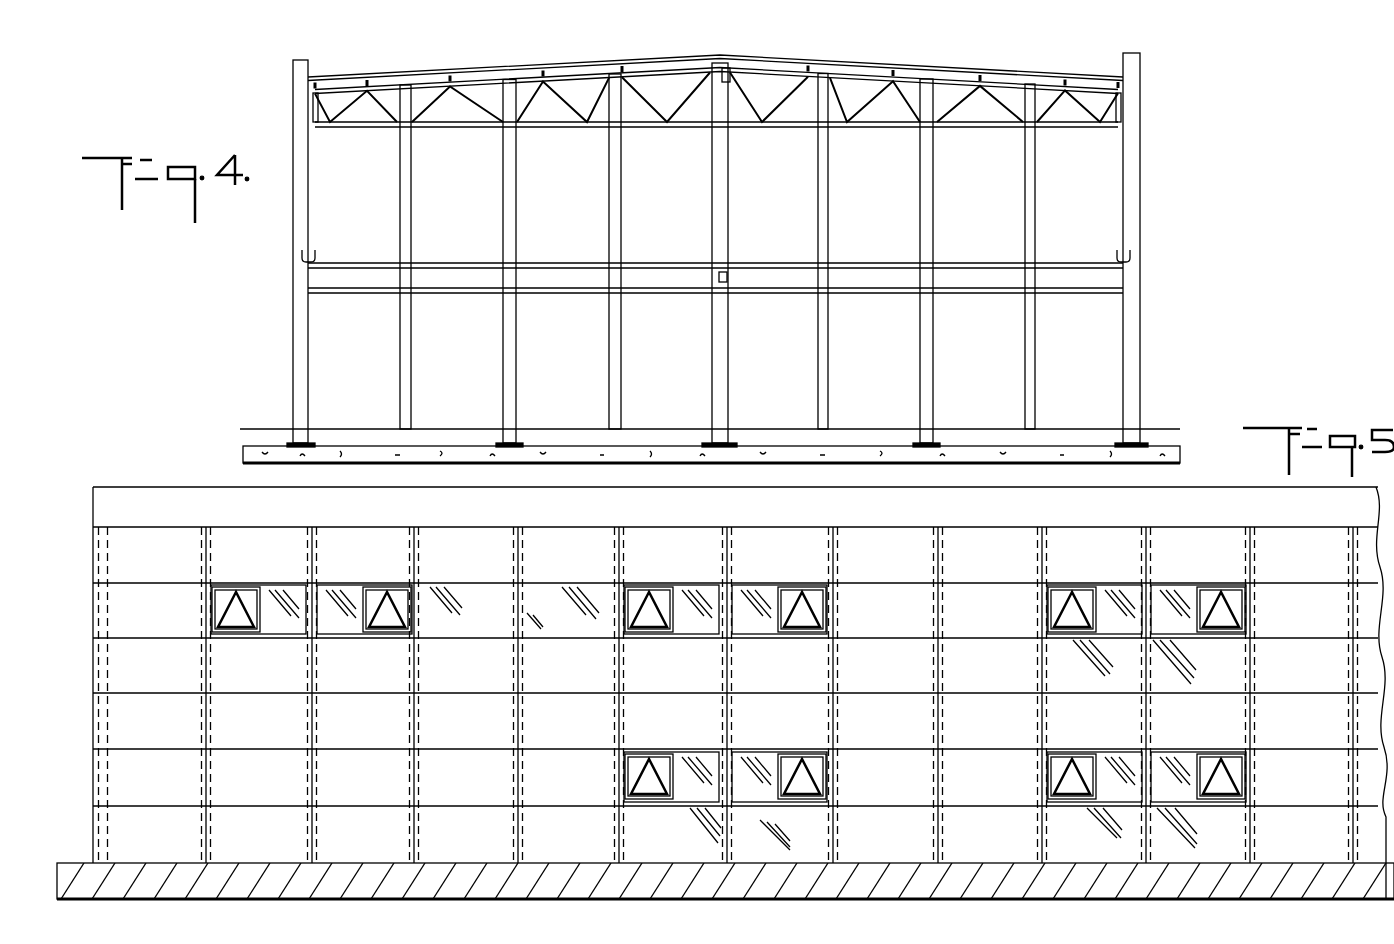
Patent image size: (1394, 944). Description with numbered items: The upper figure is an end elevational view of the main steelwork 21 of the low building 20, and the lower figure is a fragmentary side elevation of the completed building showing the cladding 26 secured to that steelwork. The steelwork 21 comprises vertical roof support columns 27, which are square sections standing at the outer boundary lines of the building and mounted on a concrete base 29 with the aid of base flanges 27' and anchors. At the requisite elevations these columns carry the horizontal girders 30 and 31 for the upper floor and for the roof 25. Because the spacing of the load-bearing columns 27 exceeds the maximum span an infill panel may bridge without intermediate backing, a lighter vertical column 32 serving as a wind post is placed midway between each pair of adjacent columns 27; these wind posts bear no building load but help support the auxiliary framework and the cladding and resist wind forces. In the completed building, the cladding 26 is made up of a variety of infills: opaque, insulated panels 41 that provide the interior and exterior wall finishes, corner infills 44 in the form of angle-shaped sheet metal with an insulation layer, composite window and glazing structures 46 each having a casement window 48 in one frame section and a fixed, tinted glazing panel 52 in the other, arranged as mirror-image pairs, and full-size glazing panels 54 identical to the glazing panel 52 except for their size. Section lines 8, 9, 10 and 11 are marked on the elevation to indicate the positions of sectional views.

In FIG. 5, the section line 8 is at (155, 671).
In FIG. 5, the section line 9 is at (226, 613).
In FIG. 5, the section line 10 is at (524, 601).
In FIG. 5, the section line 11 is at (623, 841).
In FIG. 5, the low building 20 is at (70, 560).
In FIG. 4, the main steelwork 21 is at (281, 320).
In FIG. 4, the roof 25 is at (489, 61).
In FIG. 5, the roof 25 is at (138, 488).
In FIG. 5, the cladding 26 is at (880, 840).
In FIG. 4, the roof support column 27 is at (716, 248).
In FIG. 4, the base flange 27' is at (717, 420).
In FIG. 4, the concrete base 29 is at (853, 448).
In FIG. 5, the concrete base 29 is at (257, 893).
In FIG. 4, the horizontal girder 30 is at (660, 262).
In FIG. 4, the horizontal girder 31 is at (986, 132).
In FIG. 4, the wind post column 32 is at (413, 196).
In FIG. 5, the infill panel 41 is at (233, 554).
In FIG. 5, the corner infill 44 is at (87, 738).
In FIG. 5, the composite window and glazing structure 46 is at (250, 584).
In FIG. 5, the casement window 48 is at (247, 634).
In FIG. 5, the glazing panel 52 is at (297, 623).
In FIG. 5, the full-size glazing panel 54 is at (456, 581).